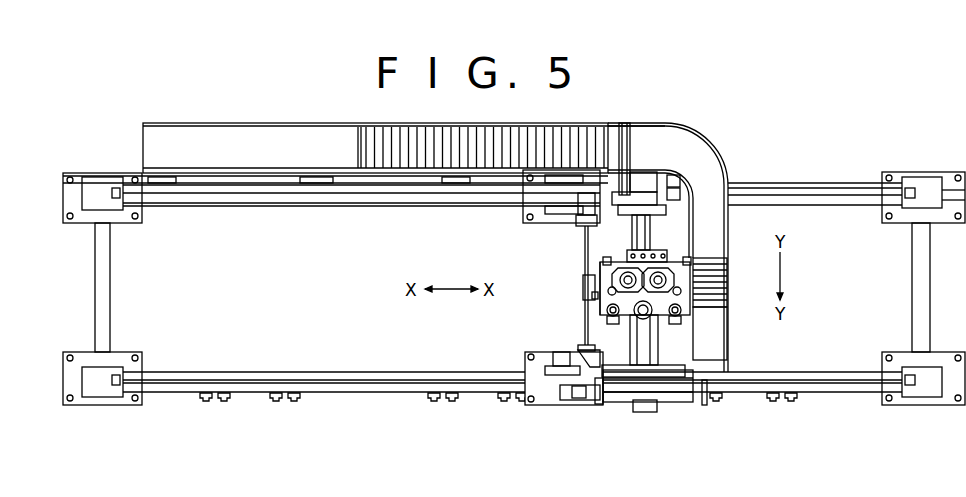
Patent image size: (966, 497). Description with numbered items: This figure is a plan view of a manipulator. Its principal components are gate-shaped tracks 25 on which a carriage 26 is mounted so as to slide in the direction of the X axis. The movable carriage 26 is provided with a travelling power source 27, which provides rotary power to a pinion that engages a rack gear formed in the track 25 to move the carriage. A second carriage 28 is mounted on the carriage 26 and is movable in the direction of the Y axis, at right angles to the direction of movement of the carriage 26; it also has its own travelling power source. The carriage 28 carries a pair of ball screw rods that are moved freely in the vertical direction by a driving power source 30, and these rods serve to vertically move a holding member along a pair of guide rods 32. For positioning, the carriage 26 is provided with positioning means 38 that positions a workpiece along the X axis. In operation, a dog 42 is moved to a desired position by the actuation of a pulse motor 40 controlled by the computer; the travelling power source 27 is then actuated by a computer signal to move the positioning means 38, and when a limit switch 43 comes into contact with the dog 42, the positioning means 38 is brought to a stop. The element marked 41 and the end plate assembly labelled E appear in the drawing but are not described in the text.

The gate-shaped tracks 25 is at (401, 196).
The carriage 26 is at (635, 338).
The travelling power source 27 is at (656, 180).
The carriage 28 is at (700, 266).
The driving power source 30 is at (646, 313).
The guide rods 32 is at (605, 263).
The positioning means 38 is at (565, 243).
The pulse motor 40 is at (593, 208).
The rod 41 is at (583, 238).
The dog 42 is at (583, 280).
The limit switch 43 is at (586, 300).
The end plate assembly E is at (899, 172).